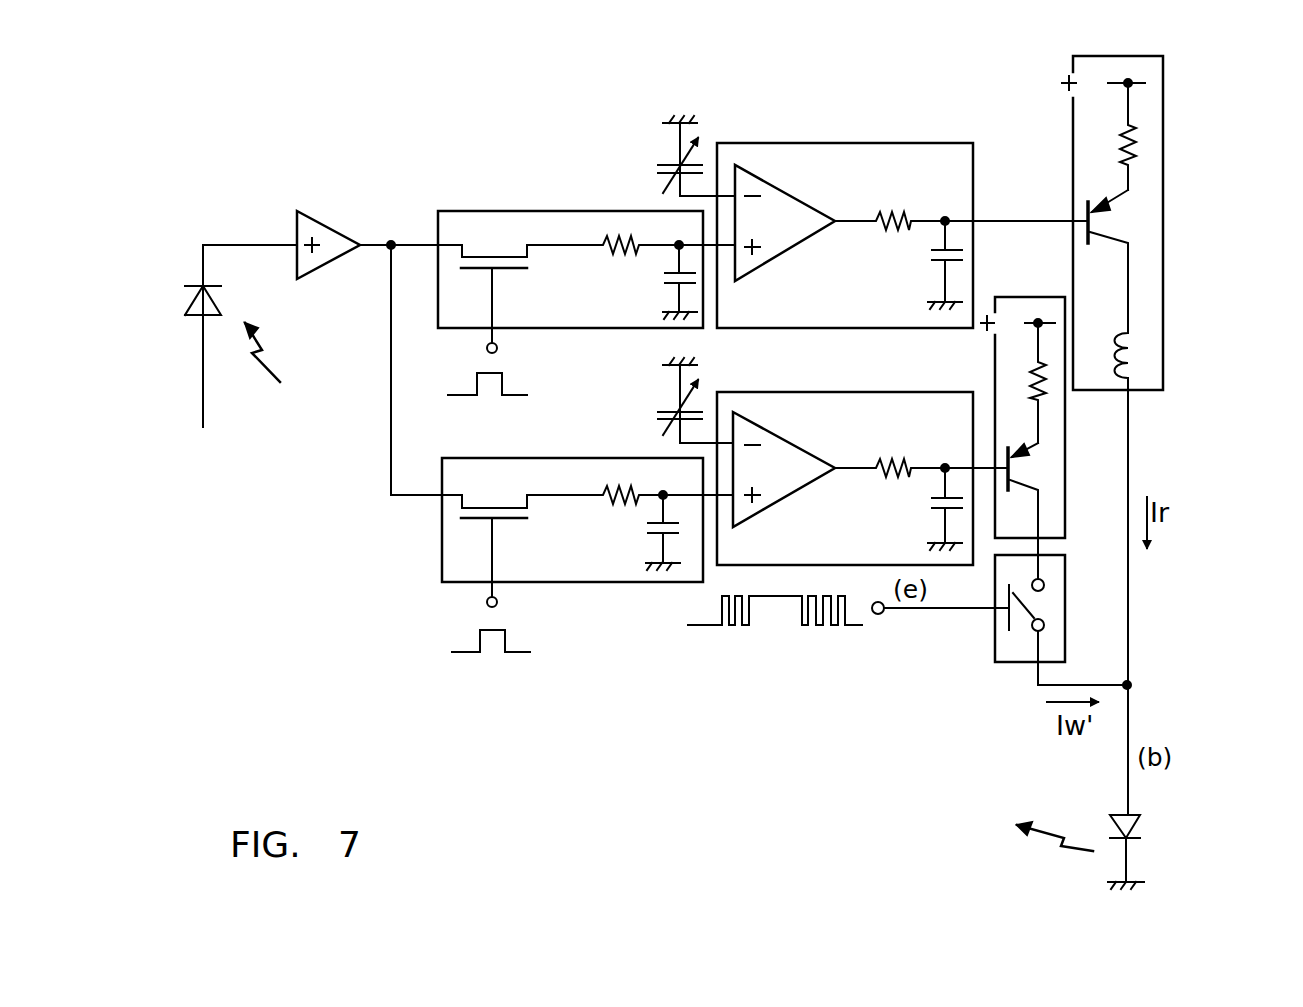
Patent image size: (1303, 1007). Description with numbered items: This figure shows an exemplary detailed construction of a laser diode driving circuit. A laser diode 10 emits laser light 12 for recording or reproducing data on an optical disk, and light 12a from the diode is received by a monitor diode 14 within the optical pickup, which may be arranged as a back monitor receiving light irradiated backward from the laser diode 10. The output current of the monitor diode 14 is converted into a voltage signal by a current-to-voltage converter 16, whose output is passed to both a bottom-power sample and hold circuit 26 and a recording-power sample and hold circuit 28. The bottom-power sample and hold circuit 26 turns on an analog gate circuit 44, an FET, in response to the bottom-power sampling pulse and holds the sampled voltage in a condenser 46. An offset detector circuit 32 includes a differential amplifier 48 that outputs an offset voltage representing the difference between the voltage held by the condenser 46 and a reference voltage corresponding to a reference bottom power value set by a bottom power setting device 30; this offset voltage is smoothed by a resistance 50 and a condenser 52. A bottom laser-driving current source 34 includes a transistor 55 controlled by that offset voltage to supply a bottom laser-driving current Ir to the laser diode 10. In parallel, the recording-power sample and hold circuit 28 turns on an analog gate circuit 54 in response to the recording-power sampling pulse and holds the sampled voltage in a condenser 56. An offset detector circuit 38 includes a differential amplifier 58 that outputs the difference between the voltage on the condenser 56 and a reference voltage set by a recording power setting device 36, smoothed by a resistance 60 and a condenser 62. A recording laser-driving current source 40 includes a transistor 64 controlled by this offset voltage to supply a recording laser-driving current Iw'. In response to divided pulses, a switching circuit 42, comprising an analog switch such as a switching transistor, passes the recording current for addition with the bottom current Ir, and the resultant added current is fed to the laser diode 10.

The laser diode 10 is at (1135, 836).
The laser light 12 is at (1040, 842).
The received light 12a is at (262, 368).
The monitor diode 14 is at (183, 297).
The current-to-voltage converter 16 is at (320, 265).
The bottom-power sample and hold circuit 26 is at (577, 263).
The recording-power sample and hold circuit 28 is at (577, 565).
The bottom power setting device 30 is at (668, 170).
The offset detector circuit 32 is at (895, 198).
The bottom laser-driving current source 34 is at (1156, 435).
The recording power setting device 36 is at (670, 408).
The offset detector circuit 38 is at (855, 453).
The recording laser-driving current source 40 is at (1033, 407).
The switching circuit 42 is at (995, 650).
The analog gate circuit 44 is at (500, 270).
The condenser 46 is at (658, 274).
The differential amplifier 48 is at (800, 198).
The resistance 50 is at (890, 204).
The condenser 52 is at (933, 252).
The analog gate circuit 54 is at (505, 520).
The transistor 55 is at (1102, 228).
The condenser 56 is at (652, 528).
The differential amplifier 58 is at (788, 497).
The resistance 60 is at (890, 457).
The condenser 62 is at (933, 498).
The transistor 64 is at (1020, 470).